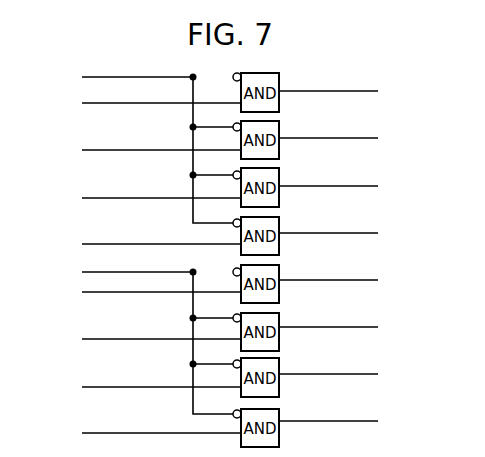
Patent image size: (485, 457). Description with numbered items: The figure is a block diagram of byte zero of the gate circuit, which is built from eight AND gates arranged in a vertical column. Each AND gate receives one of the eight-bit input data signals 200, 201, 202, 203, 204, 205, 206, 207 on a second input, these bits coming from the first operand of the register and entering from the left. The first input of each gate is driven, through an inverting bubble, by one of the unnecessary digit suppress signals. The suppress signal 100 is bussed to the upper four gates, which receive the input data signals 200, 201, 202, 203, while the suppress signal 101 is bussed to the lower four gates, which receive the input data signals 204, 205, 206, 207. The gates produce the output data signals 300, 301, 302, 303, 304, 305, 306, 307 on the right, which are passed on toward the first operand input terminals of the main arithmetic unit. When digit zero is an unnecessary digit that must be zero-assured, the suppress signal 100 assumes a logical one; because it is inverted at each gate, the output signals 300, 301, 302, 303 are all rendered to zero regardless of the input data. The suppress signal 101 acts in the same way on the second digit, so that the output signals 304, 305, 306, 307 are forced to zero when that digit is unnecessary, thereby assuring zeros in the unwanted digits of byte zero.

The unnecessary digit suppress signal 100 is at (136, 144).
The unnecessary digit suppress signal 101 is at (136, 337).
The input data signal 200 is at (140, 103).
The input data signal 201 is at (140, 149).
The input data signal 202 is at (140, 198).
The input data signal 203 is at (140, 244).
The input data signal 204 is at (140, 292).
The input data signal 205 is at (140, 339).
The input data signal 206 is at (140, 387).
The input data signal 207 is at (140, 433).
The output data signal 300 is at (350, 91).
The output data signal 301 is at (350, 138).
The output data signal 302 is at (350, 186).
The output data signal 303 is at (350, 233).
The output data signal 304 is at (350, 280).
The output data signal 305 is at (350, 327).
The output data signal 306 is at (350, 374).
The output data signal 307 is at (350, 421).